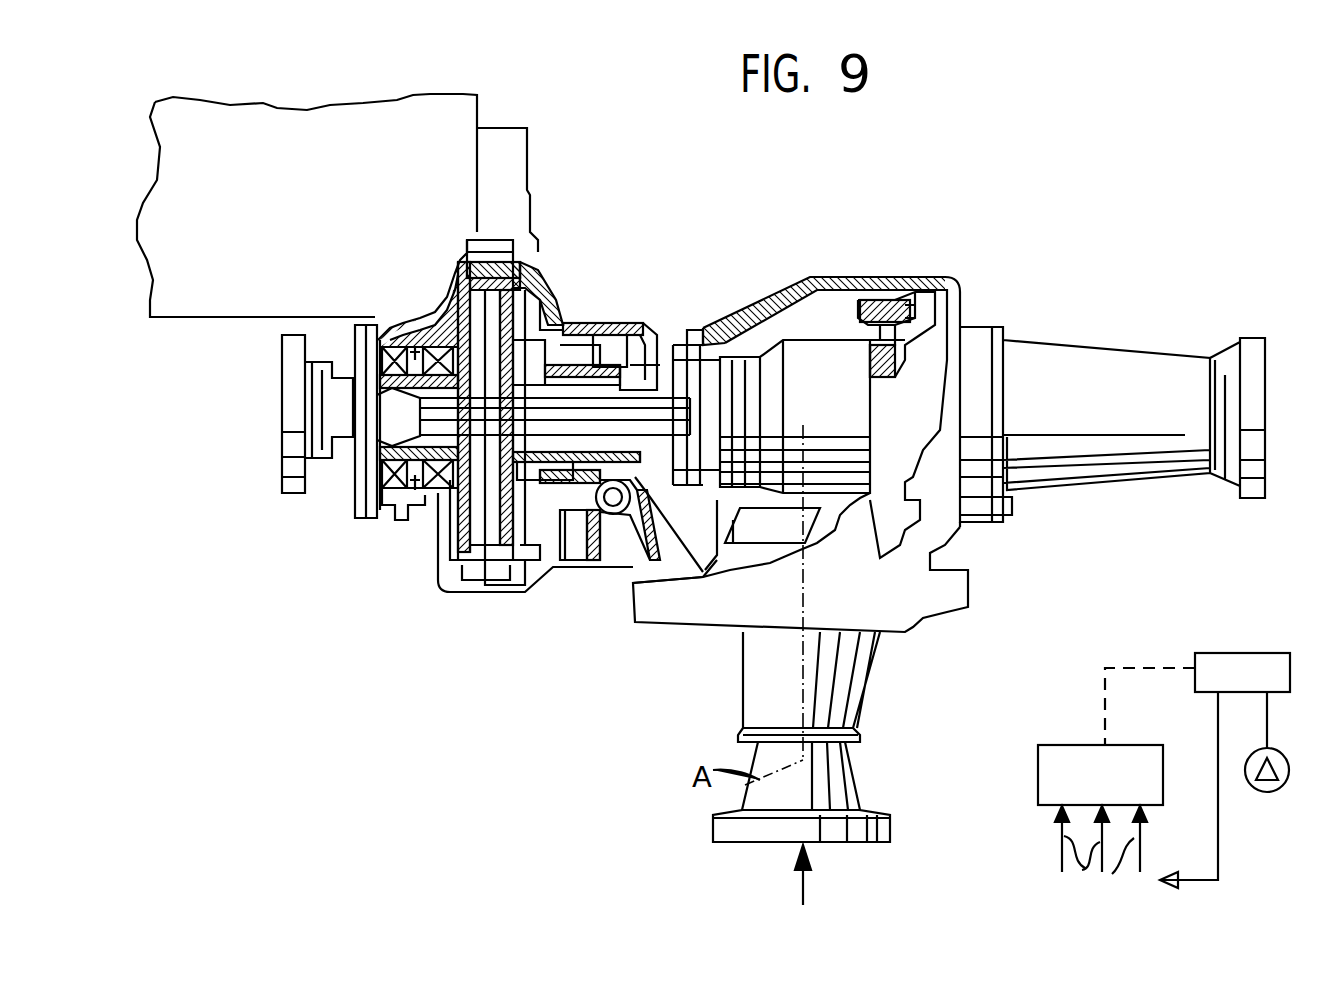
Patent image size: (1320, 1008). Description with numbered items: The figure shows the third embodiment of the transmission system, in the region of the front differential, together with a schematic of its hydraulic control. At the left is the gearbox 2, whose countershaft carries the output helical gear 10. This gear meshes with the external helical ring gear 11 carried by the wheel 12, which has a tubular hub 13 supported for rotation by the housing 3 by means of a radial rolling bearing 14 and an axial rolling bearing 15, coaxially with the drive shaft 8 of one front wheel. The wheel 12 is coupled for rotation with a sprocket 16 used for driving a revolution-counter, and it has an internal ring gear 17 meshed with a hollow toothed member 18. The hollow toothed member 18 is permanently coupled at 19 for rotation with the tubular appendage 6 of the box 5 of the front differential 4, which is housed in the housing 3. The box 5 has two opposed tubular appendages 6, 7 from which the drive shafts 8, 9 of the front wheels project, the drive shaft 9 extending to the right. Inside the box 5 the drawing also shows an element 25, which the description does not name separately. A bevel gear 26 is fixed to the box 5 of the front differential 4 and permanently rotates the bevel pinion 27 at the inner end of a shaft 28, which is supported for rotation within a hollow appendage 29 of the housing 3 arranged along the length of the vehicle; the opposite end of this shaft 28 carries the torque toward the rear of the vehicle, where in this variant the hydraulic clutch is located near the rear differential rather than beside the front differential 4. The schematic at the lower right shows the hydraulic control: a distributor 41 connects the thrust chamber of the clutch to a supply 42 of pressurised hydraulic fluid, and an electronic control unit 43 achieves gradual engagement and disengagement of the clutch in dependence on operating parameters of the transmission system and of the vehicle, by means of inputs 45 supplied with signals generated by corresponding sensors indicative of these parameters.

The gearbox 2 is at (187, 297).
The housing 3 is at (552, 330).
The differential 4 is at (815, 332).
The box 5 is at (776, 320).
The tubular appendage 6 is at (652, 352).
The tubular appendage 7 is at (942, 372).
The drive shaft 8 is at (575, 560).
The drive shaft 9 is at (1066, 405).
The helical gear 10 is at (480, 255).
The external helical ring gear 11 is at (502, 594).
The wheel 12 is at (440, 583).
The tubular hub 13 is at (392, 407).
The radial rolling bearing 14 is at (425, 522).
The axial rolling bearing 15 is at (385, 492).
The sprocket 16 is at (628, 558).
The internal ring gear 17 is at (470, 595).
The hollow toothed member 18 is at (557, 340).
The coupling 19 is at (614, 358).
The piston 25 is at (840, 320).
The bevel gear 26 is at (900, 302).
The bevel pinion 27 is at (703, 580).
The shaft 28 is at (790, 623).
The hollow appendage 29 is at (860, 692).
The distributor 41 is at (1228, 668).
The supply of pressurised hydraulic fluid 42 is at (1266, 790).
The electronic control unit 43 is at (1060, 780).
The inputs 45 is at (1120, 862).